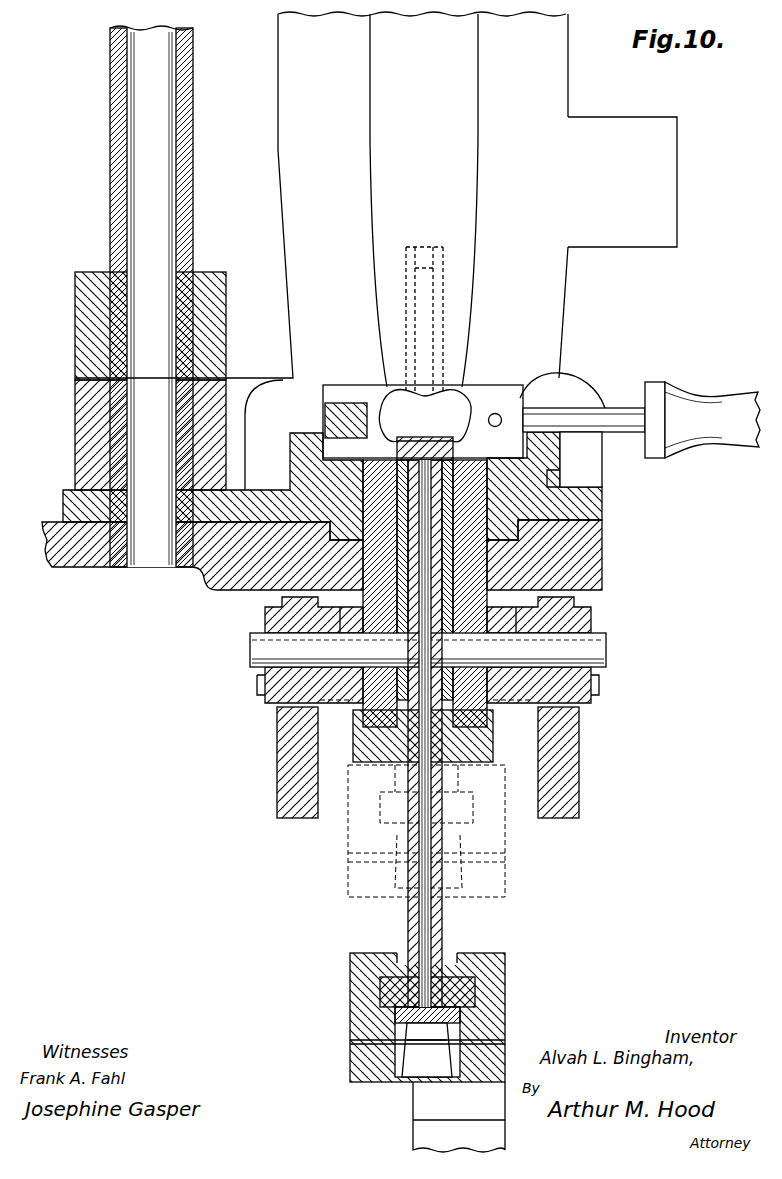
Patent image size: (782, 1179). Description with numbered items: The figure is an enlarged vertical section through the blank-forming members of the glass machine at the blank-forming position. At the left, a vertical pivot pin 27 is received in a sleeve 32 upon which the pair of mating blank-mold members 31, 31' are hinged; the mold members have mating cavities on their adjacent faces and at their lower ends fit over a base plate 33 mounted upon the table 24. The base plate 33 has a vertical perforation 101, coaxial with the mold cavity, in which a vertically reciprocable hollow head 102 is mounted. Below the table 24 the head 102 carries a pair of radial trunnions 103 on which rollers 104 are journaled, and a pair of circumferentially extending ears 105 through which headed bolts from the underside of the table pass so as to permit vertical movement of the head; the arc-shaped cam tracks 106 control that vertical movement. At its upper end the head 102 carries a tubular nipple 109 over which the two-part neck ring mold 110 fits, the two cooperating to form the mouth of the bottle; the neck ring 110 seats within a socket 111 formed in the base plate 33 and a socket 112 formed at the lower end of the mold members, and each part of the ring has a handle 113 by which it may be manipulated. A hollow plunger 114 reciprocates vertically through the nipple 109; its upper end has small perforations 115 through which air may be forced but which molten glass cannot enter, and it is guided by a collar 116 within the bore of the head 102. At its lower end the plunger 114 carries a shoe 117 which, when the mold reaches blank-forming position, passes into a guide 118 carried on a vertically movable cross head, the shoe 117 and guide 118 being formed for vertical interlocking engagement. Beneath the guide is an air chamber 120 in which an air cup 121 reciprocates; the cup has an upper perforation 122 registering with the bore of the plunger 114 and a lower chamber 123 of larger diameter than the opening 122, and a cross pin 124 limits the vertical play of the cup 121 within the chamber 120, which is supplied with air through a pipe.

The table 24 is at (602, 582).
The pivot pin 27 is at (151, 296).
The blank-mold member 31 is at (401, 251).
The blank-mold member 31' is at (648, 182).
The sleeve 32 is at (197, 264).
The base plate 33 is at (602, 503).
The vertical perforation 101 is at (365, 527).
The hollow head 102 is at (385, 496).
The radial trunnion 103 is at (250, 652).
The roller 104 is at (275, 690).
The ear 105 is at (283, 782).
The cam track 106 is at (598, 790).
The nipple 109 is at (489, 432).
The neck ring mold 110 is at (466, 406).
The socket 111 is at (565, 452).
The socket 112 is at (517, 400).
The handle 113 is at (682, 398).
The hollow plunger 114 is at (448, 577).
The perforation 115 is at (450, 405).
The collar 116 is at (492, 758).
The shoe 117 is at (440, 1000).
The guide 118 is at (478, 992).
The air chamber 120 is at (414, 1085).
The air cup 121 is at (462, 1017).
The perforation 122 is at (398, 1018).
The chamber 123 is at (413, 1053).
The cross pin 124 is at (505, 1040).